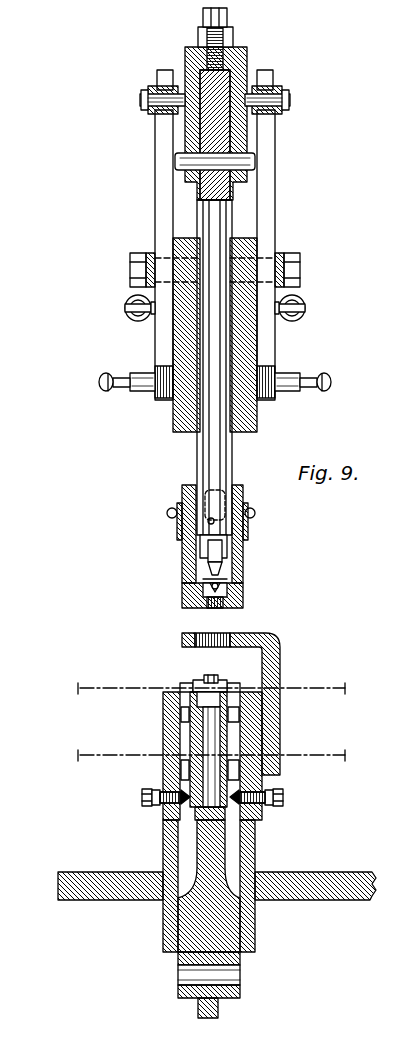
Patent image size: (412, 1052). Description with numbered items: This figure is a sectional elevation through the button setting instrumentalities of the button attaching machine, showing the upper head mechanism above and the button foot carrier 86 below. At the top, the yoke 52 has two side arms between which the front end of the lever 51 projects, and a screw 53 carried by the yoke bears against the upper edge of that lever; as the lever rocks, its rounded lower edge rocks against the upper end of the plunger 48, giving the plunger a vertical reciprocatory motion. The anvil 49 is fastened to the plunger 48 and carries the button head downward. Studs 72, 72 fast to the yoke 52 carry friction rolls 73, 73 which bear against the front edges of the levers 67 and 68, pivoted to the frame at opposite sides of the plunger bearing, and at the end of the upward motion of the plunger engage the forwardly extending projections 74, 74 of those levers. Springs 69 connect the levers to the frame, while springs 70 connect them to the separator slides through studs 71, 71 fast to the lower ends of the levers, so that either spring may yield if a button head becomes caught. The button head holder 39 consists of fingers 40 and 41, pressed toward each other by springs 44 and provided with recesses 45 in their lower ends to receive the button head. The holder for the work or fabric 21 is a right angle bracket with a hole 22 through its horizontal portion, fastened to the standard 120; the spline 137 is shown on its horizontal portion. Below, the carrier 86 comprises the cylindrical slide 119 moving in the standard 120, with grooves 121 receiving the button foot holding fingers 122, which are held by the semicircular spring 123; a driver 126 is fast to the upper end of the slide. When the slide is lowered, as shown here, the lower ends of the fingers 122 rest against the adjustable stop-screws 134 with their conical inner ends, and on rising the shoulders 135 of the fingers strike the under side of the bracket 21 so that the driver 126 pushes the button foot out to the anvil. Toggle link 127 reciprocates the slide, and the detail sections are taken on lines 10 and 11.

The yoke 52 is at (190, 47).
The screw 53 is at (228, 17).
The lever 51 is at (190, 128).
The forwardly extending projections 74 is at (165, 72).
The friction rolls 73 is at (160, 115).
The studs 72 is at (142, 100).
The lever 67 is at (158, 347).
The lever 68 is at (272, 345).
The springs 69 is at (125, 306).
The springs 70 is at (105, 374).
The studs 71 is at (140, 395).
The plunger 48 is at (205, 462).
The button head holder 39 is at (246, 550).
The springs 44 is at (178, 562).
The anvil 49 is at (205, 548).
The finger 40 is at (200, 597).
The recesses 45 is at (230, 605).
The finger 41 is at (245, 600).
The hole 22 is at (188, 633).
The spline 137 is at (222, 622).
The holder for the work or fabric 21 is at (265, 633).
The driver 126 is at (262, 712).
The shoulders 135 is at (182, 683).
The button foot carrier 86 is at (200, 680).
The semicircular spring 123 is at (185, 747).
The button foot holding fingers 122 is at (182, 714).
The adjustable stop-screws 134 is at (142, 799).
The section line 10- 10 is at (223, 689).
The section line 11- 11 is at (221, 757).
The slide 119 is at (220, 918).
The grooves or ways 121 is at (178, 842).
The standard 120 is at (258, 848).
The toggle link 127 is at (212, 1008).